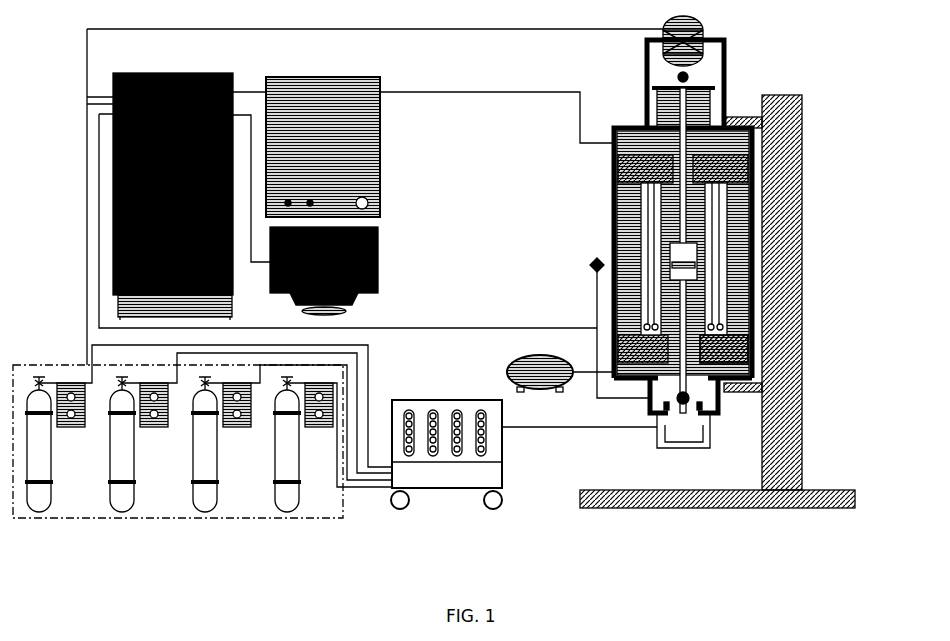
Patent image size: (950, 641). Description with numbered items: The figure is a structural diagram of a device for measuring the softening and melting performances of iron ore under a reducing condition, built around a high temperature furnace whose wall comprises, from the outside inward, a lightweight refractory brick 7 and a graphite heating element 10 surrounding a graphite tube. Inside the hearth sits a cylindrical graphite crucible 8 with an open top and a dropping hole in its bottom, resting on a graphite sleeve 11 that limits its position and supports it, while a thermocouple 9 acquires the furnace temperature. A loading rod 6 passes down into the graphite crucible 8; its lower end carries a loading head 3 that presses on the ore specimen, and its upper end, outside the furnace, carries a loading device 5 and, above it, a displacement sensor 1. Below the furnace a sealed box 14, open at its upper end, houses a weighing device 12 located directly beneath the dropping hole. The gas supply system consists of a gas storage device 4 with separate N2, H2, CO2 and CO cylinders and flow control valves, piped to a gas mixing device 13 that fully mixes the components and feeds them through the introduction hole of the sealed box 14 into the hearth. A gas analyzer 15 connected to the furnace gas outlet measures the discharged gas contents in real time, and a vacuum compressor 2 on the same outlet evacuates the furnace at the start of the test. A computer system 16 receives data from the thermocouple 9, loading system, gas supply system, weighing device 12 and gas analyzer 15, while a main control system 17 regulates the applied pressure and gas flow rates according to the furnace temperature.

The displacement sensor 1 is at (688, 77).
The vacuum compressor 2 is at (541, 355).
The loading head 3 is at (597, 263).
The gas storage device 4 is at (47, 365).
The loading device 5 is at (703, 27).
The loading rod 6 is at (683, 143).
The lightweight refractory brick 7 is at (769, 270).
The graphite crucible 8 is at (697, 244).
The thermocouple 9 is at (592, 259).
The graphite heating element 10 is at (725, 304).
The graphite sleeve 11 is at (700, 345).
The weighing device 12 is at (689, 399).
The gas mixing device 13 is at (450, 398).
The sealed box 14 is at (710, 434).
The gas analyzer 15 is at (380, 147).
The computer system 16 is at (380, 268).
The main control system 17 is at (113, 123).